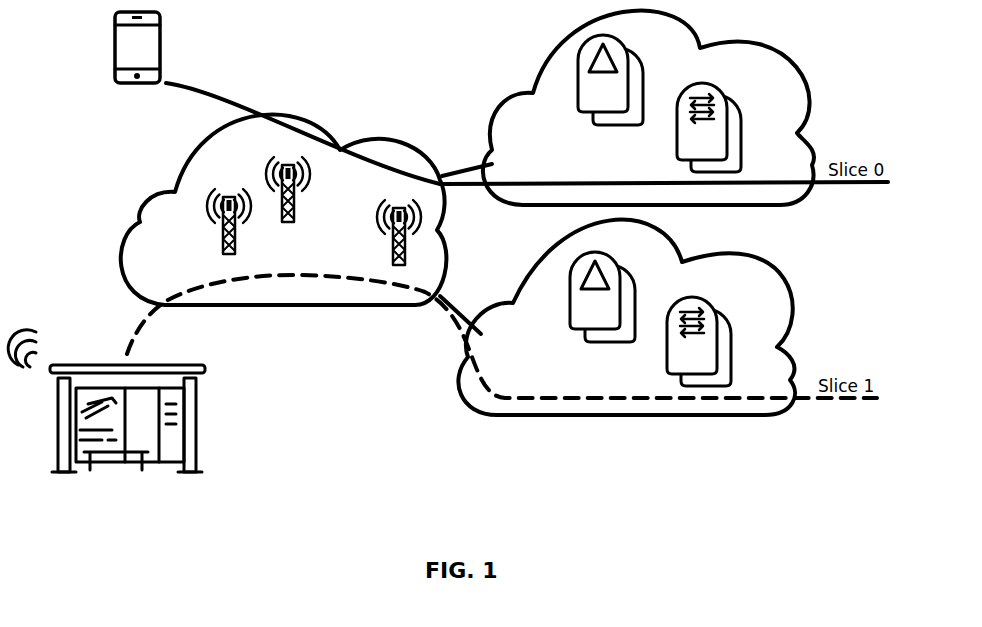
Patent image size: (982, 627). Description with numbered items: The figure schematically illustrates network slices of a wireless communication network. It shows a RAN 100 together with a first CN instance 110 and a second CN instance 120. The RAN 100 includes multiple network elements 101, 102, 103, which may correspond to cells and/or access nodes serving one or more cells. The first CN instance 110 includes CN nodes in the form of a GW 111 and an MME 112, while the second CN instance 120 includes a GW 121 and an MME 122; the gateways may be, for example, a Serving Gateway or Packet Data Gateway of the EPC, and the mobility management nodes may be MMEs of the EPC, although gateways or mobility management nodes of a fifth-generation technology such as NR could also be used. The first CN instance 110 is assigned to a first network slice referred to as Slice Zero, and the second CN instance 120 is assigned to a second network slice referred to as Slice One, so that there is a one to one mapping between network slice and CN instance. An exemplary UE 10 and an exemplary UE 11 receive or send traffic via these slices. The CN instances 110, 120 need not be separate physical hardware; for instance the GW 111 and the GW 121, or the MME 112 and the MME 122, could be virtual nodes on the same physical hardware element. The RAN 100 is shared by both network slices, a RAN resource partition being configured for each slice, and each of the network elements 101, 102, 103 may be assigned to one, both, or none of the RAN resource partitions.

The UE 10 is at (113, 33).
The UE 11 is at (197, 440).
The RAN 100 is at (130, 224).
The network element 101 is at (222, 236).
The network element 102 is at (390, 236).
The network element 103 is at (296, 200).
The first CN instance 110 is at (491, 134).
The GW 111 is at (676, 127).
The MME 112 is at (577, 99).
The second CN instance 120 is at (523, 268).
The GW 121 is at (665, 336).
The MME 122 is at (569, 300).